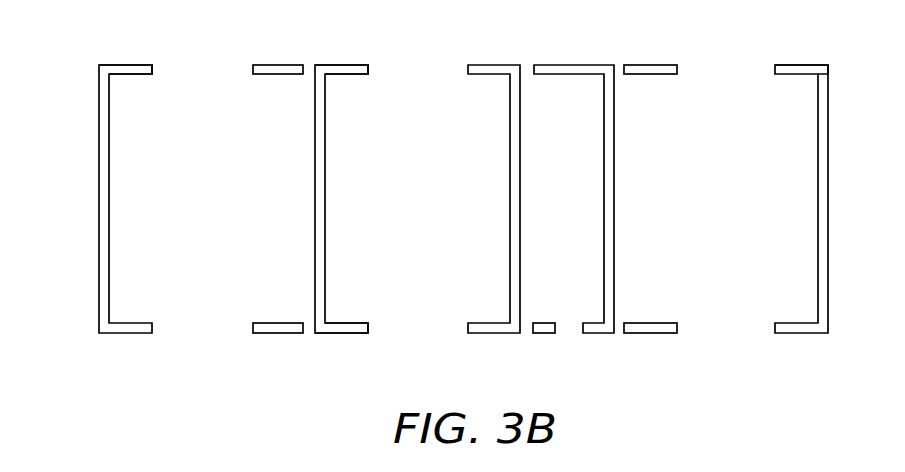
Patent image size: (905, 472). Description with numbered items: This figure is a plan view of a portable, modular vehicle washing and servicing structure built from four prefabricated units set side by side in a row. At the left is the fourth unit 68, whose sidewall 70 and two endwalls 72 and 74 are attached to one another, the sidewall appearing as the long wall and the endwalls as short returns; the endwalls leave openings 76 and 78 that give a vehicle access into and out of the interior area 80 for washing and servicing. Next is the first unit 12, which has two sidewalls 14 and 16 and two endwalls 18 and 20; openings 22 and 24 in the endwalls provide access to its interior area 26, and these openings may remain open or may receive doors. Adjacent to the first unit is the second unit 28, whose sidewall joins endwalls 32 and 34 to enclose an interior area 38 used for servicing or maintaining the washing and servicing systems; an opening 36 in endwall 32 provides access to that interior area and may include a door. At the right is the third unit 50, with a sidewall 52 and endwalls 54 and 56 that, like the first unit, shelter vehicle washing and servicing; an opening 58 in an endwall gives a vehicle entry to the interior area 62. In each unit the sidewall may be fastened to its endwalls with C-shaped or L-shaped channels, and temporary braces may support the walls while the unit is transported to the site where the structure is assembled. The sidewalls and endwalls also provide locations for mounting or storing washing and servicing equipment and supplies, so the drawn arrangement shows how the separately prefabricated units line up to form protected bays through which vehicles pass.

The first unit 12 is at (321, 215).
The sidewall 14 is at (315, 168).
The sidewall 16 is at (510, 184).
The endwall 18 is at (348, 321).
The endwall 20 is at (345, 64).
The opening 22 is at (405, 338).
The opening 24 is at (414, 78).
The interior area 26 is at (398, 218).
The second unit 28 is at (605, 215).
The endwall 32 is at (545, 340).
The endwall 34 is at (580, 64).
The opening 36 is at (571, 325).
The interior area 38 is at (549, 231).
The third unit 50 is at (828, 211).
The sidewall 52 is at (829, 190).
The endwall 54 is at (652, 340).
The endwall 56 is at (812, 64).
The opening 58 is at (719, 338).
The interior area 62 is at (709, 221).
The fourth unit 68 is at (99, 213).
The sidewall 70 is at (99, 178).
The endwall 72 is at (272, 340).
The endwall 74 is at (121, 64).
The opening 76 is at (194, 340).
The opening 78 is at (189, 78).
The interior area 80 is at (197, 222).